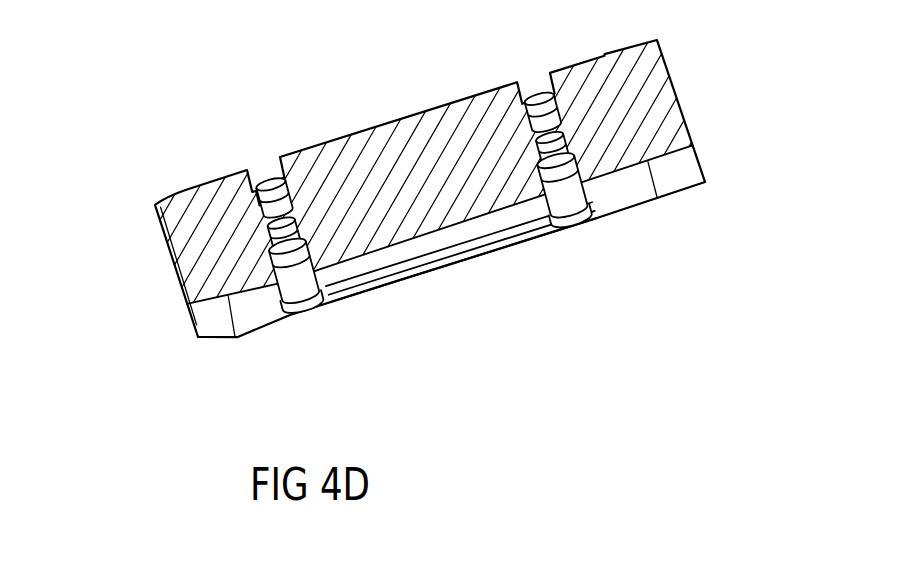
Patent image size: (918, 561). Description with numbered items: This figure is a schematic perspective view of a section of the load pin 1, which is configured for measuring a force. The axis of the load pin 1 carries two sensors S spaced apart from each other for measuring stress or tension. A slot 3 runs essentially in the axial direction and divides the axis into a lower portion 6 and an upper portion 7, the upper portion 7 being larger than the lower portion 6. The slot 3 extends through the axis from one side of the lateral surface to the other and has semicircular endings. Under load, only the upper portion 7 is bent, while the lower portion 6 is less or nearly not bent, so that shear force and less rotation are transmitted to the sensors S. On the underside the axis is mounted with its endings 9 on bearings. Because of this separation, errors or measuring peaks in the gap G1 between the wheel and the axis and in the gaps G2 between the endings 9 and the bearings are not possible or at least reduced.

The load pin 1 is at (441, 280).
The slot 3 is at (463, 250).
The lower portion 6 is at (400, 135).
The upper portion 7 is at (537, 238).
The endings 9 is at (268, 315).
The sensors S is at (278, 183).
The gap G1 is at (685, 92).
The gaps G2 is at (168, 263).